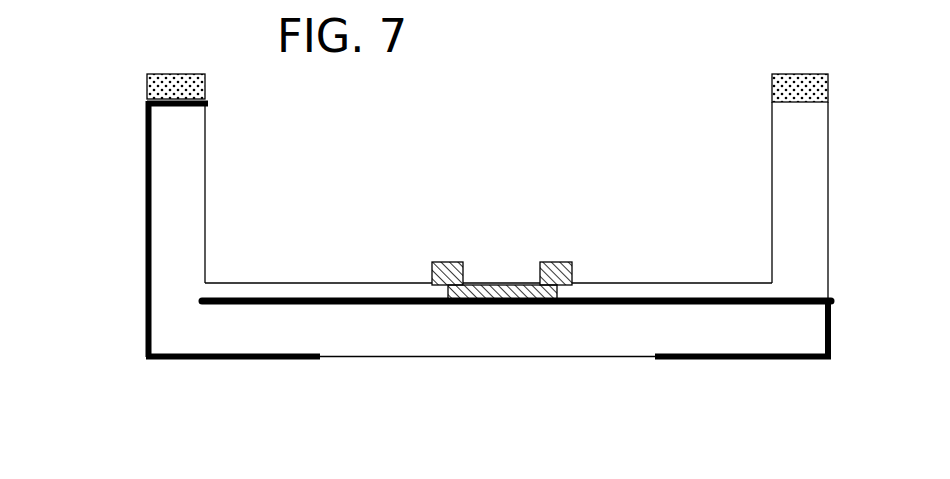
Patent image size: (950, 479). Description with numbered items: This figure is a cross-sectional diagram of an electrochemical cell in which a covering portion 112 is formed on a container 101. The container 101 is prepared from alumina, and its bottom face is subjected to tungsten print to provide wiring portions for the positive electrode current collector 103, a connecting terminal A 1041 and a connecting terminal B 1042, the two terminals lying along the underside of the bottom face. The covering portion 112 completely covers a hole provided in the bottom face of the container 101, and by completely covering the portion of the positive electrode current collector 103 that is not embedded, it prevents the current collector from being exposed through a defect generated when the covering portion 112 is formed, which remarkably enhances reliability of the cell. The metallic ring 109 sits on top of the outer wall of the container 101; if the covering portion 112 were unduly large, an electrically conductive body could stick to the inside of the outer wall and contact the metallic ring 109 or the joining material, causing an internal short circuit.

The container 101 is at (177, 217).
The connecting terminal B 1042 is at (185, 357).
The connecting terminal A 1041 is at (747, 357).
The positive electrode current collector 103 is at (572, 303).
The covering portion 112 is at (493, 283).
The metallic ring 109 is at (802, 100).